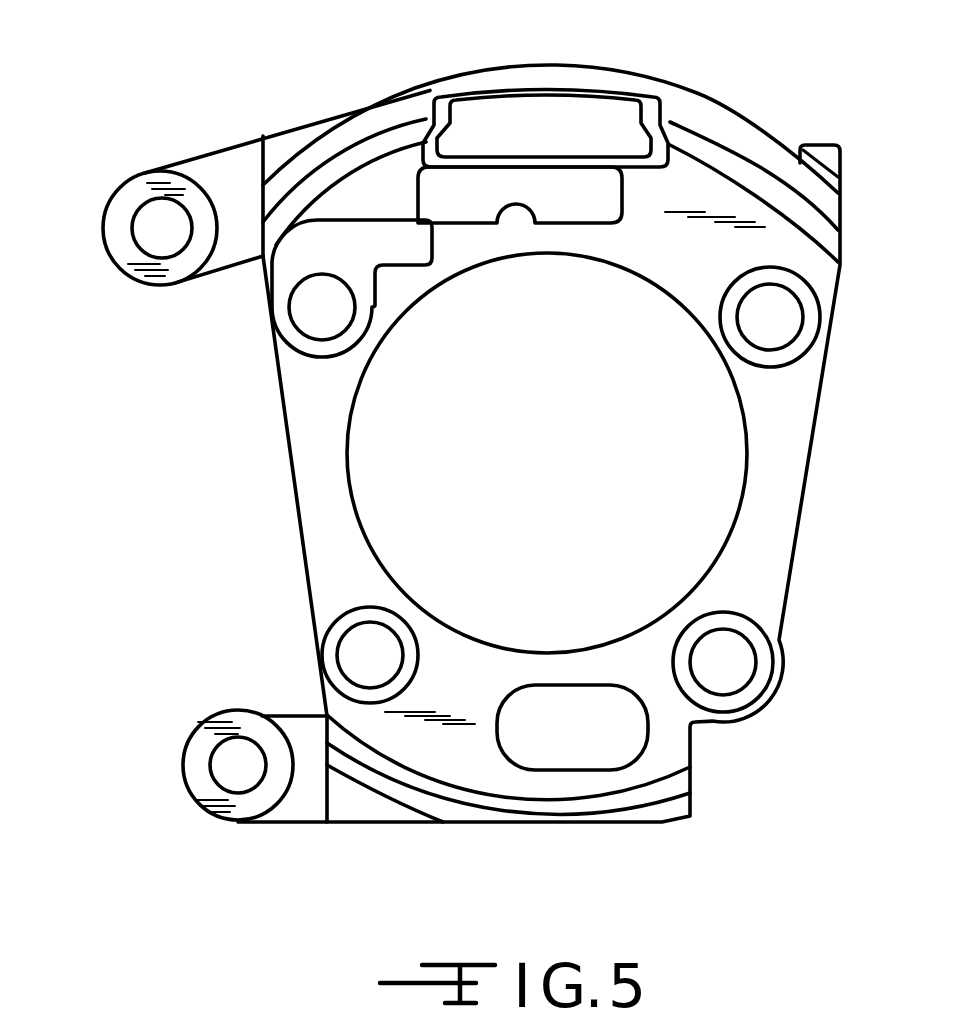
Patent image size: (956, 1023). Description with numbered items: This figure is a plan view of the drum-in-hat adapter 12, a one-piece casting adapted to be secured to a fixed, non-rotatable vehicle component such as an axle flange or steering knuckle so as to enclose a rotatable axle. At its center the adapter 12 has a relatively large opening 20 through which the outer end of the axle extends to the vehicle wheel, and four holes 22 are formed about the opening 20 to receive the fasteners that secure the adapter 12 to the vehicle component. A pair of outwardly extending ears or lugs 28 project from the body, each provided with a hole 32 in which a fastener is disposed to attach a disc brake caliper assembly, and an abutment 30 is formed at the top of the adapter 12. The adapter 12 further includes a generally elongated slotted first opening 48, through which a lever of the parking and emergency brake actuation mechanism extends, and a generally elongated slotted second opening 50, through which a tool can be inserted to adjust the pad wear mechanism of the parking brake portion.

The drum-in-hat adapter 12 is at (696, 90).
The opening 20 is at (360, 480).
The holes 22 is at (333, 322).
The ears or lugs 28 is at (122, 243).
The abutment 30 is at (535, 107).
The holes 32 is at (155, 242).
The slotted first opening 48 is at (510, 214).
The slotted second opening 50 is at (562, 748).